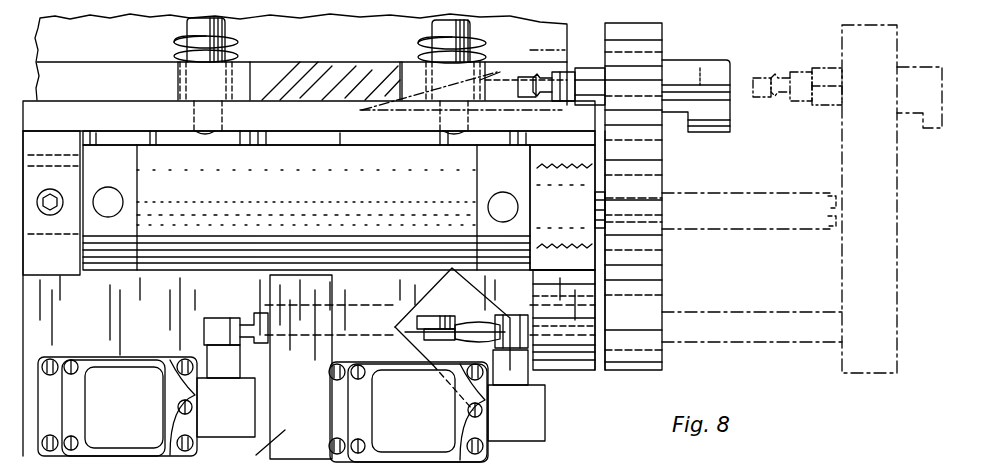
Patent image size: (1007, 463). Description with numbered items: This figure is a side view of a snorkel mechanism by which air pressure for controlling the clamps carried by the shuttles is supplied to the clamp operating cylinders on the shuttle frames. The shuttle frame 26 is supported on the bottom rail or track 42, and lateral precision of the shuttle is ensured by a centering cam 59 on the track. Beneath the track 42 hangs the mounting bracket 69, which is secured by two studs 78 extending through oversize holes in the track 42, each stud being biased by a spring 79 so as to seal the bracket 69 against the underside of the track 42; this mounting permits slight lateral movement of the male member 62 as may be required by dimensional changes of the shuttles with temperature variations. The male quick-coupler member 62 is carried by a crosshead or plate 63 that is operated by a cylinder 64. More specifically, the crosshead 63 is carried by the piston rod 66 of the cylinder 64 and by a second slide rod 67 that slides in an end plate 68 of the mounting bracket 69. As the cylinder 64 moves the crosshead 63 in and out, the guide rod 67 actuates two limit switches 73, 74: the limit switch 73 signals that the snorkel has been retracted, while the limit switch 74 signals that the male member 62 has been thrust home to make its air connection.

The track 42 is at (62, 76).
The spring 79 is at (177, 42).
The stud 78 is at (238, 53).
The centering cam 59 is at (303, 72).
The mounting bracket 69 is at (128, 108).
The shuttle frame 26 is at (398, 112).
The male member 62 is at (600, 74).
The cylinder 64 is at (284, 194).
The piston rod 66 is at (604, 194).
The crosshead 63 is at (663, 250).
The slide rod 67 is at (602, 322).
The end plate 68 is at (572, 362).
The limit switch 74 is at (136, 416).
The limit switch 73 is at (423, 418).